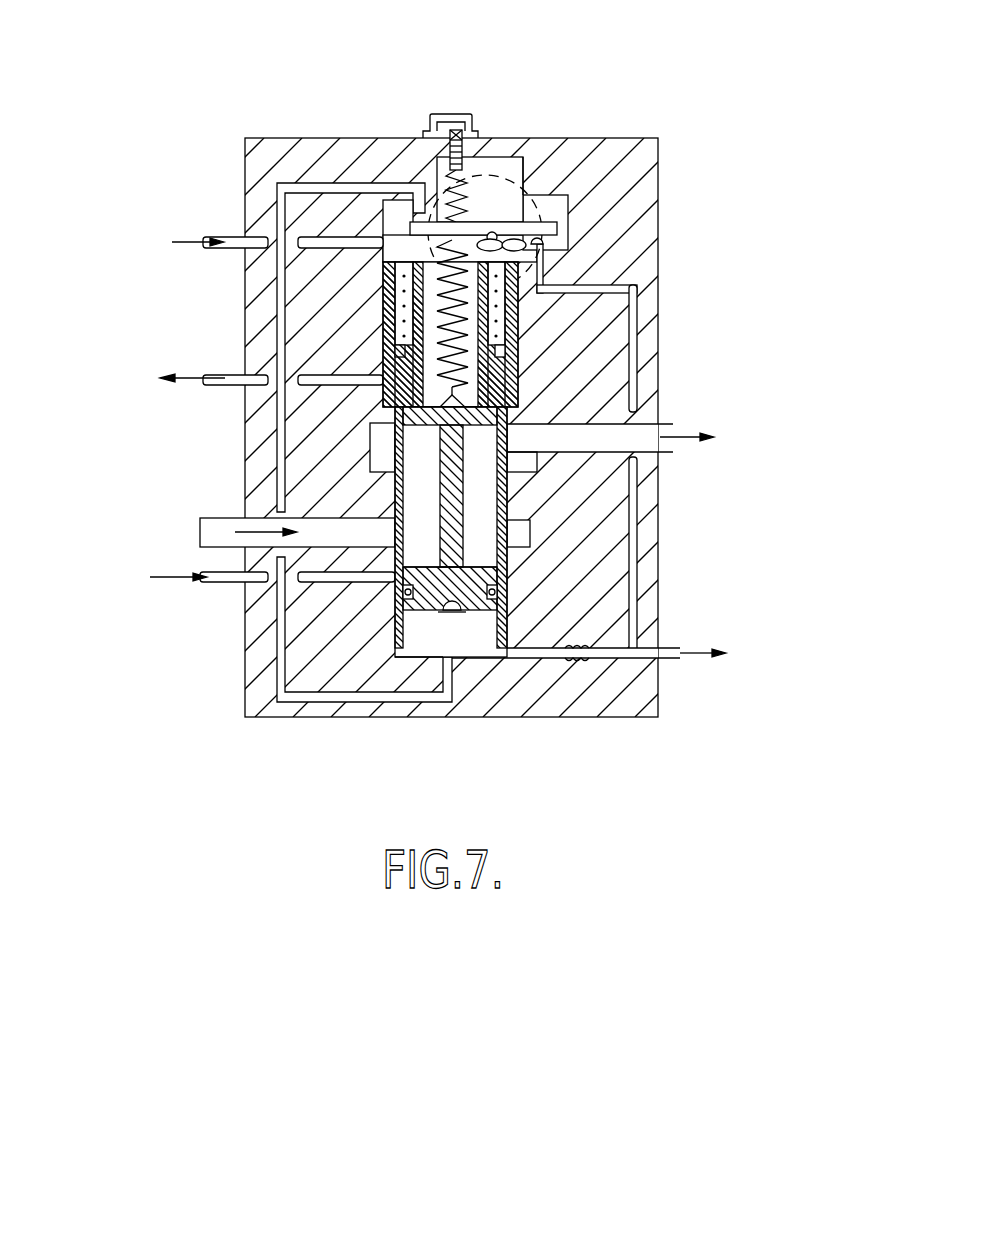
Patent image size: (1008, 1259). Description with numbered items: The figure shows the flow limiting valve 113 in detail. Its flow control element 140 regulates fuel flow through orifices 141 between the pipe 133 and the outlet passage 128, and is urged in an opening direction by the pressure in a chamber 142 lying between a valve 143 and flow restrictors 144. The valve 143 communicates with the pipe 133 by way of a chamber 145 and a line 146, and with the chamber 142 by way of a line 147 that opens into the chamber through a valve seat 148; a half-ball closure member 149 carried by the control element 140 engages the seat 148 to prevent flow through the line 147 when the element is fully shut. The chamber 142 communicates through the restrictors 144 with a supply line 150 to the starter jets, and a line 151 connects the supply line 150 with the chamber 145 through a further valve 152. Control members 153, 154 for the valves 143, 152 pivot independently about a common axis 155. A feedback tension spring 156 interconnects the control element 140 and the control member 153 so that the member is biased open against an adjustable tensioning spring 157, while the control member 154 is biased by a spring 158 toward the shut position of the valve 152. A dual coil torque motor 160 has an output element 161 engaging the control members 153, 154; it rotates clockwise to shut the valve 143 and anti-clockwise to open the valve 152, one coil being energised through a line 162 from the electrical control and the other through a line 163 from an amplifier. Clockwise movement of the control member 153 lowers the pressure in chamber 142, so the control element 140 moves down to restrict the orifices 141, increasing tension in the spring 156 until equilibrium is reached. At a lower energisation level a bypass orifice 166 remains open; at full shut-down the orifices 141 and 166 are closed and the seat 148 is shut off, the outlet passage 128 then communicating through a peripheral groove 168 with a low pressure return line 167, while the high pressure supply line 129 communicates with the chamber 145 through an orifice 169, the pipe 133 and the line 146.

The flow limiting valve 113 is at (214, 727).
The outlet passage 128 is at (640, 426).
The high pressure supply line 129 is at (236, 585).
The pipe 133 is at (300, 516).
The flow control element 140 is at (478, 655).
The orifices 141 is at (507, 437).
The chamber 142 is at (472, 645).
The valve 143 is at (400, 224).
The flow restrictors 144 is at (593, 658).
The chamber 145 is at (390, 212).
The line 146 is at (222, 248).
The line 147 is at (283, 647).
The valve seat 148 is at (445, 654).
The half-ball closure member 149 is at (455, 614).
The supply line 150 is at (680, 648).
The line 151 is at (633, 523).
The further valve 152 is at (566, 237).
The control member 153 is at (421, 220).
The control member 154 is at (523, 197).
The common axis 155 is at (491, 210).
The feedback tension spring 156 is at (440, 320).
The adjustable tensioning spring 157 is at (447, 205).
The spring 158 is at (558, 222).
The dual coil torque motor 160 is at (515, 178).
The output element 161 is at (528, 252).
The line 162 is at (506, 85).
The line 163 is at (500, 178).
The bypass orifice 166 is at (507, 458).
The low pressure return line 167 is at (240, 382).
The peripheral groove 168 is at (503, 372).
The orifice 169 is at (397, 590).